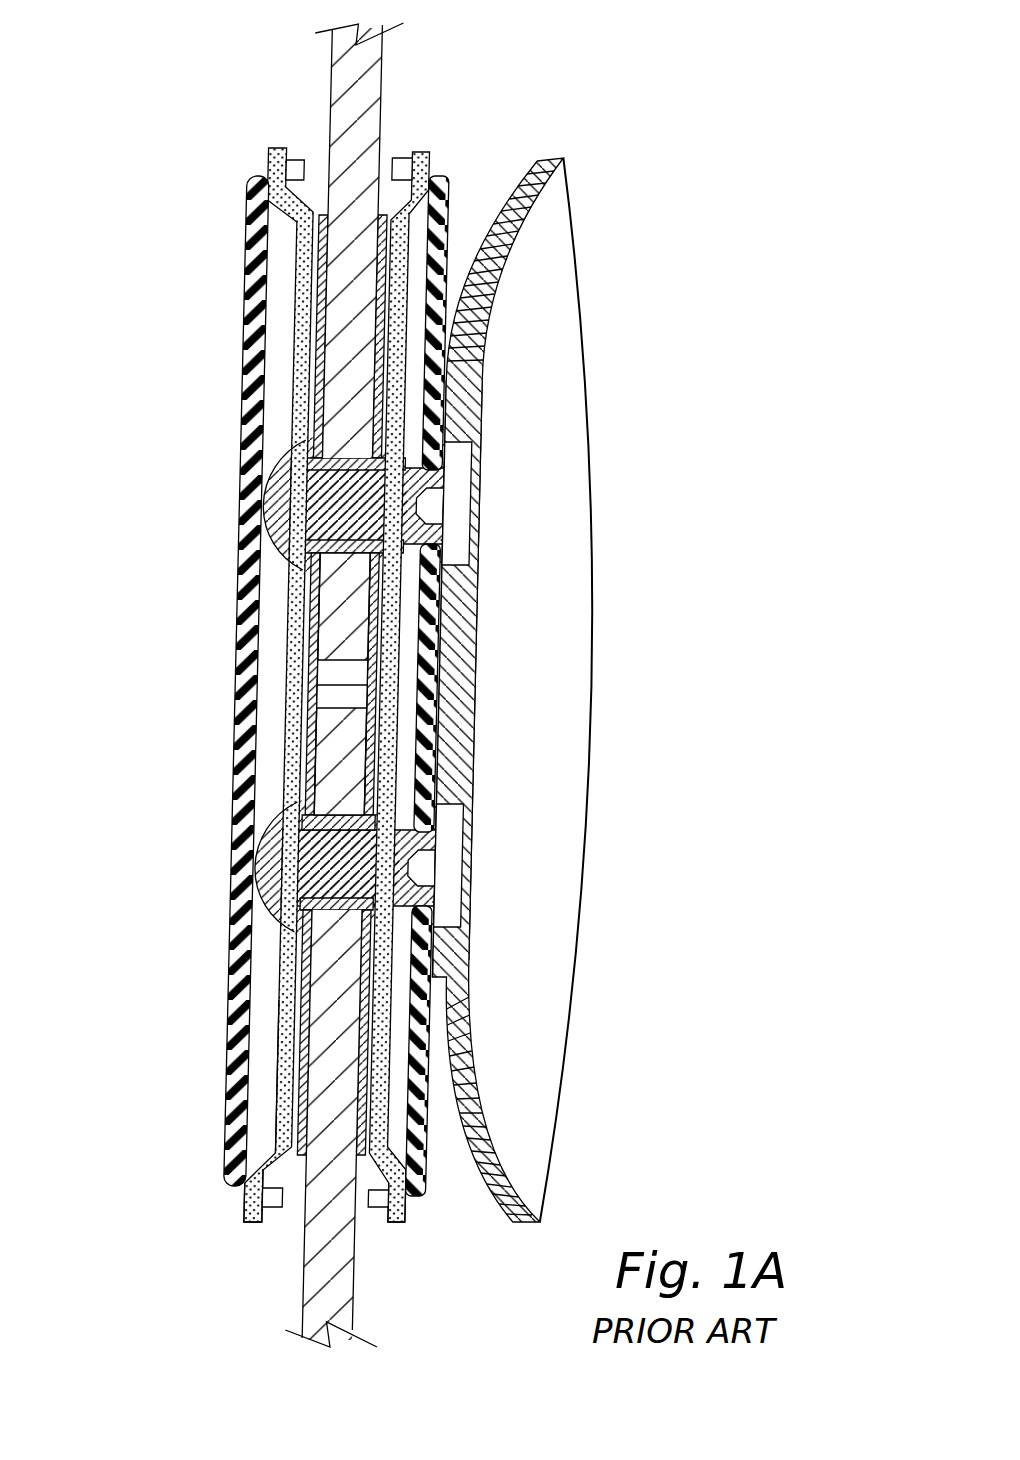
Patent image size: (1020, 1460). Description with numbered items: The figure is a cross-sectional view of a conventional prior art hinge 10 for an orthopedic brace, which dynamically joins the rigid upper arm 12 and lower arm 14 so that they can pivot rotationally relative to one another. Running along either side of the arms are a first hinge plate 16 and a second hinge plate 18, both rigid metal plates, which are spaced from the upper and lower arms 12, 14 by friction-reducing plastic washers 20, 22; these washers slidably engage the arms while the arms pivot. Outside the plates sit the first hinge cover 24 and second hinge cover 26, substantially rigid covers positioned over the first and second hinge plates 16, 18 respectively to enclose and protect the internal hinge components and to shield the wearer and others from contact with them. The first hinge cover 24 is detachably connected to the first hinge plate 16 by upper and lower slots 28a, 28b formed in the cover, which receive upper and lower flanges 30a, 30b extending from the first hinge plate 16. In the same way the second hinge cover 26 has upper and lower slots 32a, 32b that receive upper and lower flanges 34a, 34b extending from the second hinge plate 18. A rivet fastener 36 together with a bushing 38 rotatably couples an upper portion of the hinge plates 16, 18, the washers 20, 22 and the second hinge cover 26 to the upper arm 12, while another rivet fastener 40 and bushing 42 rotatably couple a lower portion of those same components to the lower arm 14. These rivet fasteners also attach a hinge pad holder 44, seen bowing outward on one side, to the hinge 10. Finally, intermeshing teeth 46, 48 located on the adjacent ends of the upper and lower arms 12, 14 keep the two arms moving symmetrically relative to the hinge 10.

The hinge 10 is at (186, 462).
The upper arm 12 is at (372, 65).
The lower arm 14 is at (376, 1266).
The first hinge plate 16 is at (221, 1076).
The second hinge plate 18 is at (406, 259).
The washer 20 is at (330, 210).
The washer 22 is at (385, 212).
The first hinge cover 24 is at (261, 186).
The second hinge cover 26 is at (446, 195).
The upper slot 28a is at (267, 168).
The lower slot 28b is at (274, 1197).
The upper flange 30a is at (281, 147).
The lower flange 30b is at (278, 1223).
The upper slot 32a is at (436, 170).
The lower slot 32b is at (438, 1199).
The upper flange 34a is at (426, 157).
The lower flange 34b is at (425, 1224).
The rivet fastener 36 is at (277, 519).
The bushing 38 is at (332, 450).
The rivet fastener 40 is at (276, 845).
The bushing 42 is at (321, 928).
The hinge pad holder 44 is at (599, 400).
The intermeshing teeth 46 is at (343, 670).
The intermeshing teeth 48 is at (346, 695).